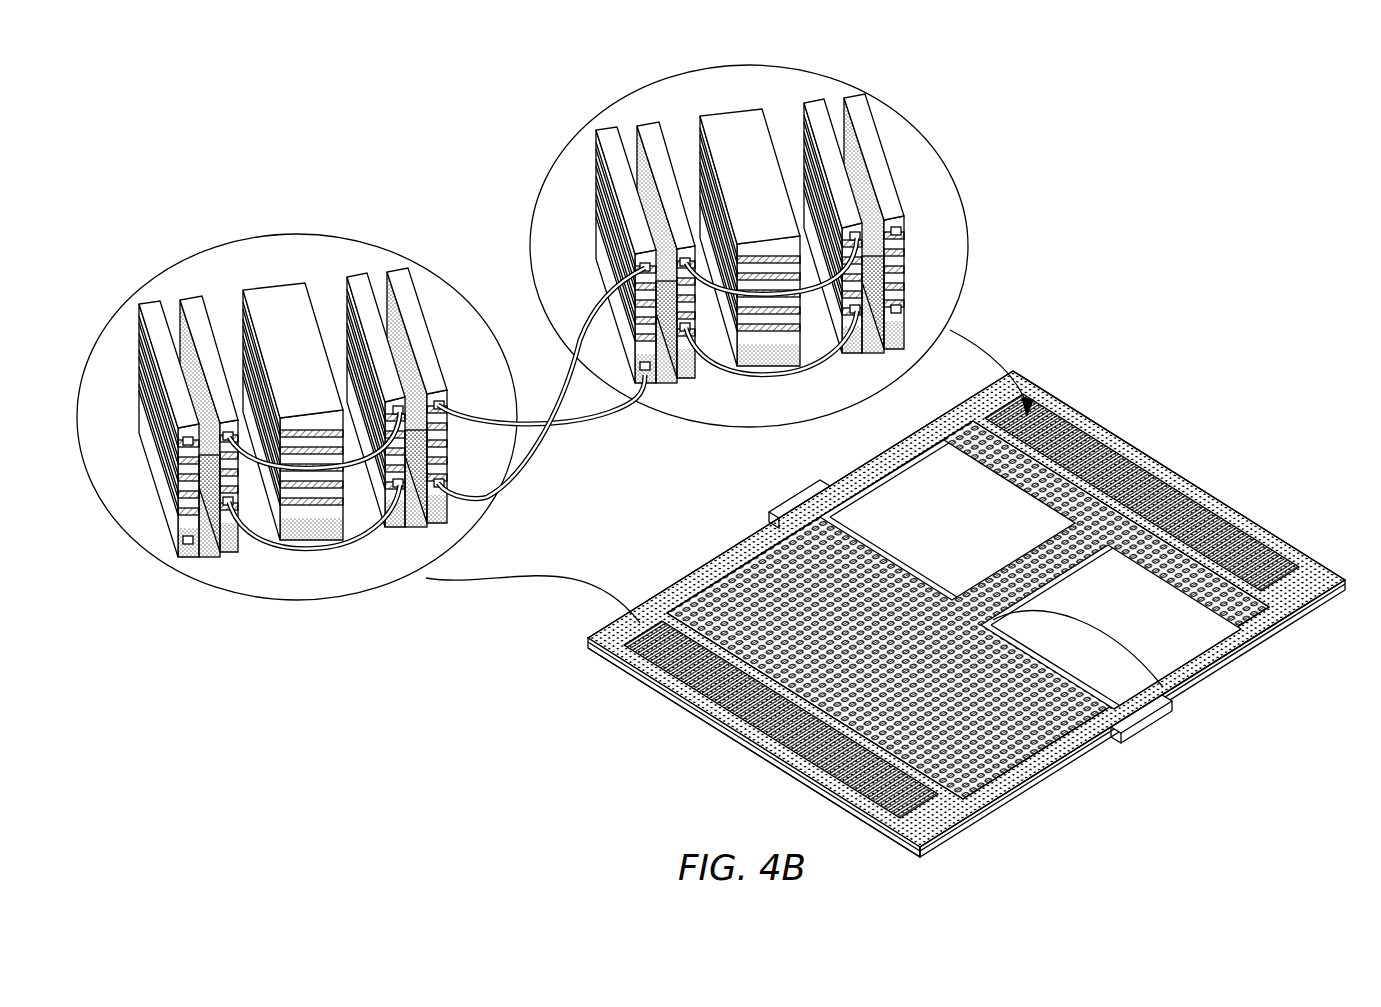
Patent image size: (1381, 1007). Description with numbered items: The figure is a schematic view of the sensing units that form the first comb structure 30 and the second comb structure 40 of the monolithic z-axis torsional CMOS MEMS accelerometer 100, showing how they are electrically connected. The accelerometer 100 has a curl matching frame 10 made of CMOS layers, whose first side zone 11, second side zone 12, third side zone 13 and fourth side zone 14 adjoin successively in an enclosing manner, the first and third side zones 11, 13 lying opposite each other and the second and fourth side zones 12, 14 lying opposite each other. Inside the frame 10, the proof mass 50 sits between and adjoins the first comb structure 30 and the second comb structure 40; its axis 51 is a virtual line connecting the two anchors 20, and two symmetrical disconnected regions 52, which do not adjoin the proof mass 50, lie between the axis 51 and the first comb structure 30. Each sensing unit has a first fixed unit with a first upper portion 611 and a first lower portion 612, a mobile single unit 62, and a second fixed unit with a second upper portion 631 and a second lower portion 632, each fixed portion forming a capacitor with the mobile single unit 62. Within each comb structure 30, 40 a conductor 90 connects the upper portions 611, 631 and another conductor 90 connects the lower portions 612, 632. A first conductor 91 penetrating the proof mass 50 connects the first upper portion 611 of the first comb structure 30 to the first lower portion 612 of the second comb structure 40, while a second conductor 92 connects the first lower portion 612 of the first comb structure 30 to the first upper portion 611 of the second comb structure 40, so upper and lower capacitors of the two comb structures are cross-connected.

The curl matching frame 10 is at (588, 644).
The first side zone 11 is at (700, 566).
The second side zone 12 is at (1250, 522).
The third side zone 13 is at (1048, 778).
The fourth side zone 14 is at (730, 738).
The anchor 20 is at (782, 505).
The first comb structure 30 is at (1050, 430).
The second comb structure 40 is at (942, 840).
The proof mass 50 is at (652, 632).
The axis 51 is at (1185, 690).
The disconnected region 52 is at (1120, 577).
The mobile single unit 62 is at (278, 305).
The first upper portion 611 is at (197, 308).
The first lower portion 612 is at (165, 400).
The second upper portion 631 is at (363, 290).
The second lower portion 632 is at (430, 400).
The conductor 90 is at (327, 556).
The first conductor 91 is at (533, 462).
The second conductor 92 is at (533, 427).
The monolithic z-axis torsional CMOS MEMS accelerometer 100 is at (949, 583).